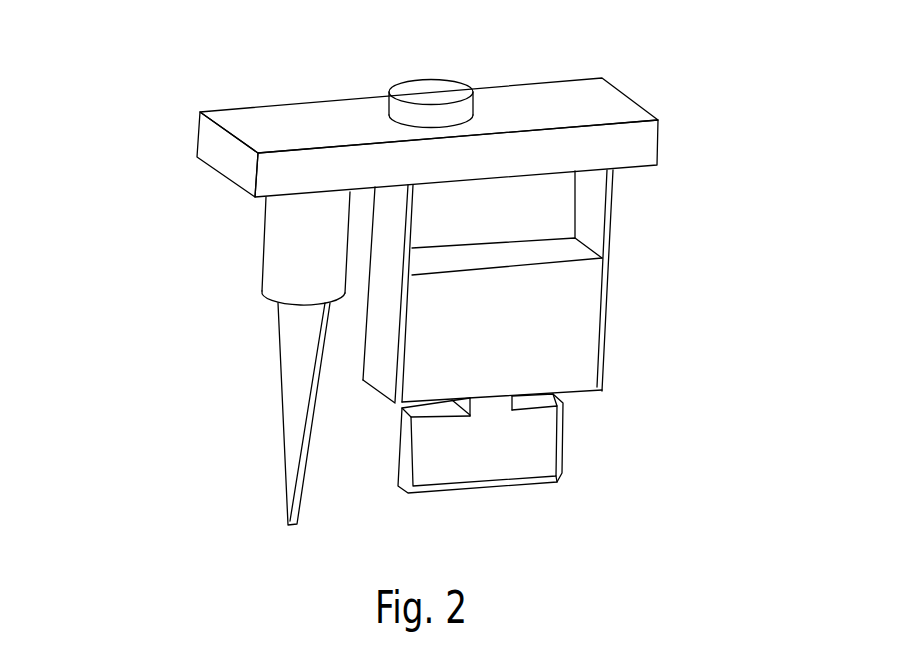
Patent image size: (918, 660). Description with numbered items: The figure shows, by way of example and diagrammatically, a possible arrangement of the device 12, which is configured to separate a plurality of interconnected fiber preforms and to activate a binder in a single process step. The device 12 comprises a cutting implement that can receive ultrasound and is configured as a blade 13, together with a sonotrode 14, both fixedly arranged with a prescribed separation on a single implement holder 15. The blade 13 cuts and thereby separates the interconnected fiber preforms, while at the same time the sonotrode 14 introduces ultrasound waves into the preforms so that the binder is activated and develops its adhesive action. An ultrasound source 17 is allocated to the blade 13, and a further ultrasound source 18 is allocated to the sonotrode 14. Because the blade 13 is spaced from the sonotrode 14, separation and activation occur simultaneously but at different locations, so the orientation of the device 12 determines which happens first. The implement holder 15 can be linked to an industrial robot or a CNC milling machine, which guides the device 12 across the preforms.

The device 12 is at (146, 88).
The blade 13 is at (300, 355).
The sonotrode 14 is at (483, 463).
The implement holder 15 is at (537, 100).
The ultrasound source 17 is at (282, 244).
The ultrasound source 18 is at (578, 307).